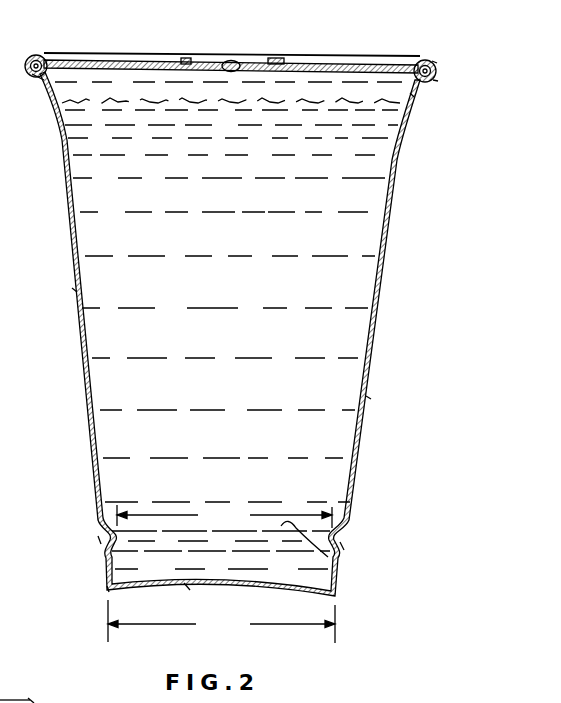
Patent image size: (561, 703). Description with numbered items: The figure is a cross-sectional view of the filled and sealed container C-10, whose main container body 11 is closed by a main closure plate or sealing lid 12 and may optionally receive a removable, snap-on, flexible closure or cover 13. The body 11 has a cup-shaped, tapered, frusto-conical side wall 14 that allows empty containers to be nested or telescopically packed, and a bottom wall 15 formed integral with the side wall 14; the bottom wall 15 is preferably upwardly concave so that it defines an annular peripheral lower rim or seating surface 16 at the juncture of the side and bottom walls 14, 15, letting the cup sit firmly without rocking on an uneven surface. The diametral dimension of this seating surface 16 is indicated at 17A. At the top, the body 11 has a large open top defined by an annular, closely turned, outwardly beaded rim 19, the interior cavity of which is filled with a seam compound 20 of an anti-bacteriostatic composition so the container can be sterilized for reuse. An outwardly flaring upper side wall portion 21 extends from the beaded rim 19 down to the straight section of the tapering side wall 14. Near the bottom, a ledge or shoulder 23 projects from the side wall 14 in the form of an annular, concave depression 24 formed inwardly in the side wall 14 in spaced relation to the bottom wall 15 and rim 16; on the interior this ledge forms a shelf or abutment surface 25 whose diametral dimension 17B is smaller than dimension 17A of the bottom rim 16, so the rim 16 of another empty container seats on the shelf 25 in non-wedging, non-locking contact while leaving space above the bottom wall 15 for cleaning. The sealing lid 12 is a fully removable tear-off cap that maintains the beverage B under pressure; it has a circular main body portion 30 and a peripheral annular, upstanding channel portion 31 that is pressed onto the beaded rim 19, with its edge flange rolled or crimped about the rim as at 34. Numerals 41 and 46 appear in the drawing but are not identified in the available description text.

The container C-10 is at (397, 229).
The circular main body portion 30 is at (323, 66).
The lid tab 41 is at (193, 59).
The outwardly beaded rim 19 is at (30, 58).
The seam compound 20 is at (38, 78).
The upstanding channel portion 31 is at (416, 61).
The sealing lid 12 is at (436, 63).
The crimped edge flange 34 is at (438, 80).
The upper side wall portion 21 is at (411, 94).
The beverage B is at (296, 329).
The main container body 11 is at (367, 398).
The side wall 14 is at (76, 290).
The ledge or shoulder 23 is at (99, 540).
The annular concave depression 24 is at (343, 547).
The shelf or abutment surface 25 is at (328, 557).
The annular peripheral lower rim 16 is at (108, 592).
The bottom wall 15 is at (186, 585).
The diametral dimension of abutment surface 17B is at (224, 517).
The diametral dimension of seating surface 17A is at (221, 621).
The adjacent figure element 46 is at (13, 702).
The flexible closure or cover 13 is at (44, 702).